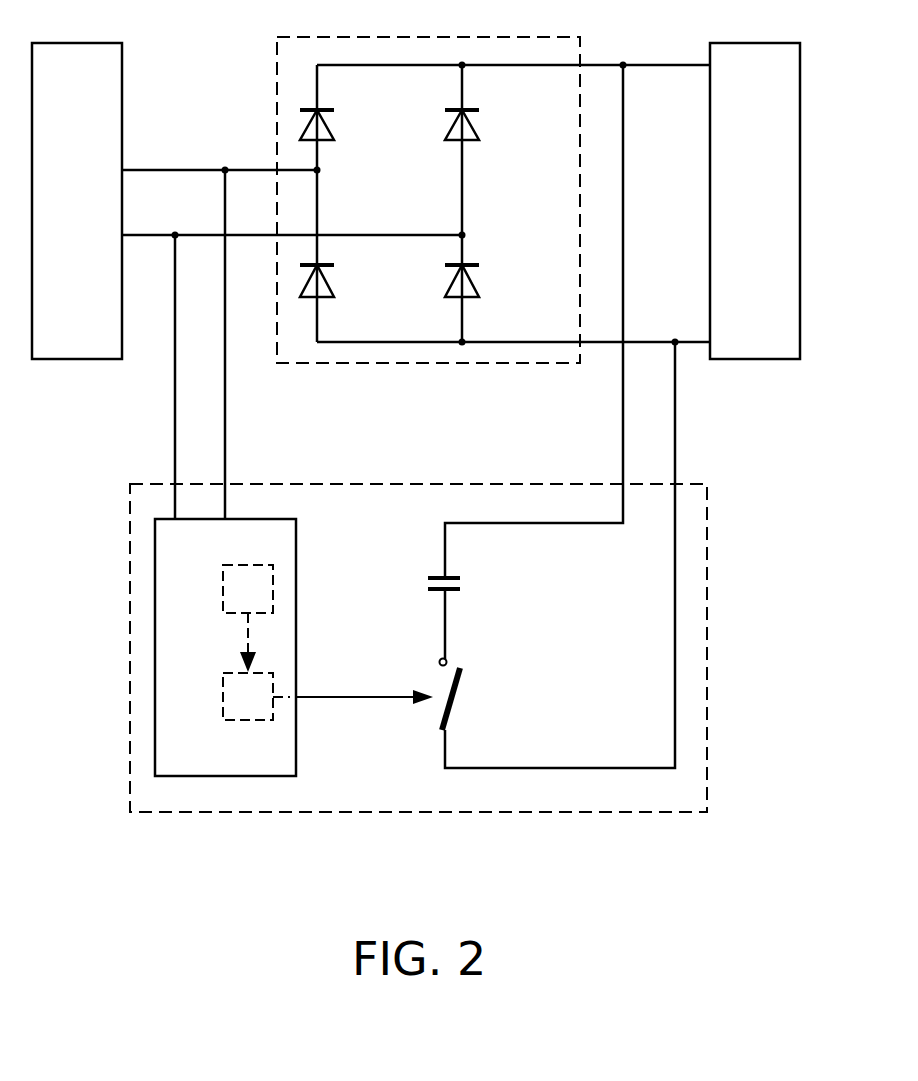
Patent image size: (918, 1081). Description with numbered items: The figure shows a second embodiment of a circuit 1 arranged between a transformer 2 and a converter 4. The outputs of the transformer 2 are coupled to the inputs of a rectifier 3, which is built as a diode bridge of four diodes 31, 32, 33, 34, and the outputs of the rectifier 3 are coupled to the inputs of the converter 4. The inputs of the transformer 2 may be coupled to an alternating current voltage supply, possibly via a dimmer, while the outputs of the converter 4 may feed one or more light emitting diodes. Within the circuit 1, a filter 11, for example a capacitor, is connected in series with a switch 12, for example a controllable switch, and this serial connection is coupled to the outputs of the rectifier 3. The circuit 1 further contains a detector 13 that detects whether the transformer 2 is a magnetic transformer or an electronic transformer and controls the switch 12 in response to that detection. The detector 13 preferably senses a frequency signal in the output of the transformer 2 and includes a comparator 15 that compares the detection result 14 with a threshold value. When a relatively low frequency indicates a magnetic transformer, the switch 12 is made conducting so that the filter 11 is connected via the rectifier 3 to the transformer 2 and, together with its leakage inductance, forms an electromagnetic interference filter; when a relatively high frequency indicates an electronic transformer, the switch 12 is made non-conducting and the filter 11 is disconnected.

The circuit 1 is at (248, 812).
The transformer 2 is at (75, 360).
The rectifier 3 is at (493, 244).
The converter 4 is at (755, 360).
The filter 11 is at (460, 580).
The switch 12 is at (455, 697).
The detector 13 is at (294, 647).
The detection result 14 is at (273, 587).
The comparator 15 is at (273, 713).
The diode 31 is at (334, 125).
The diode 32 is at (334, 282).
The diode 33 is at (479, 125).
The diode 34 is at (479, 282).